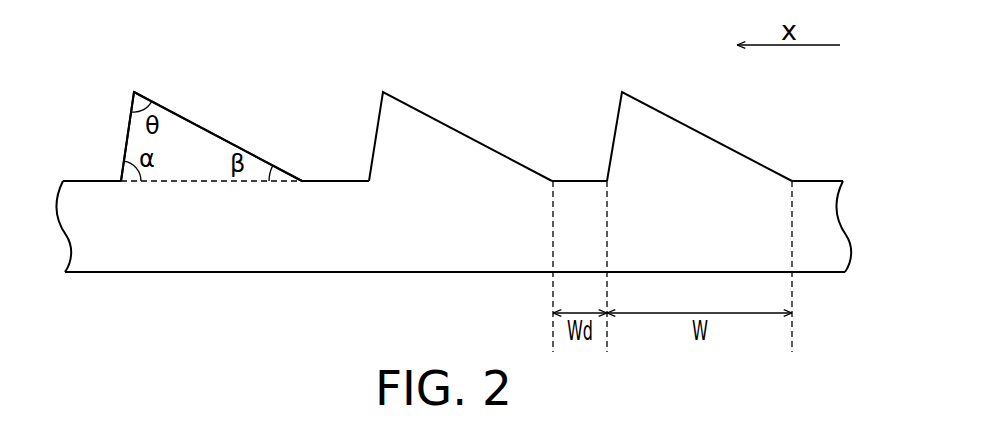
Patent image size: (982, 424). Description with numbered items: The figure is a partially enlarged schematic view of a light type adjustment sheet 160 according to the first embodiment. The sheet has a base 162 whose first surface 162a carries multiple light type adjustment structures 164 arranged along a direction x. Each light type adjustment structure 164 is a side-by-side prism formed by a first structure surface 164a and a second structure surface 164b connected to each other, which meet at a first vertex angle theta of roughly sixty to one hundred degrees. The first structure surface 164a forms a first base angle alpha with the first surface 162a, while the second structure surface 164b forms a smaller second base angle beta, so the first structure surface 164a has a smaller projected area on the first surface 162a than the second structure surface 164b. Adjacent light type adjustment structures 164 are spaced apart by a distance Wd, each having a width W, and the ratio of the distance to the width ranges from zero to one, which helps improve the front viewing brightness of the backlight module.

The light type adjustment sheet 160 is at (72, 347).
The base 162 is at (333, 230).
The first surface of the base 162a is at (818, 181).
The light type adjustment structure 164 is at (463, 153).
The first structure surface 164a is at (126, 133).
The second structure surface 164b is at (218, 133).